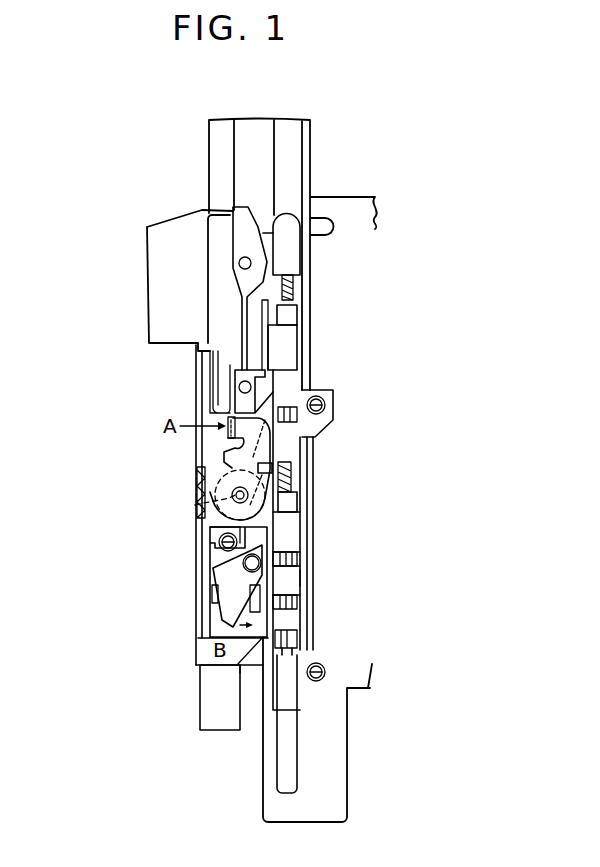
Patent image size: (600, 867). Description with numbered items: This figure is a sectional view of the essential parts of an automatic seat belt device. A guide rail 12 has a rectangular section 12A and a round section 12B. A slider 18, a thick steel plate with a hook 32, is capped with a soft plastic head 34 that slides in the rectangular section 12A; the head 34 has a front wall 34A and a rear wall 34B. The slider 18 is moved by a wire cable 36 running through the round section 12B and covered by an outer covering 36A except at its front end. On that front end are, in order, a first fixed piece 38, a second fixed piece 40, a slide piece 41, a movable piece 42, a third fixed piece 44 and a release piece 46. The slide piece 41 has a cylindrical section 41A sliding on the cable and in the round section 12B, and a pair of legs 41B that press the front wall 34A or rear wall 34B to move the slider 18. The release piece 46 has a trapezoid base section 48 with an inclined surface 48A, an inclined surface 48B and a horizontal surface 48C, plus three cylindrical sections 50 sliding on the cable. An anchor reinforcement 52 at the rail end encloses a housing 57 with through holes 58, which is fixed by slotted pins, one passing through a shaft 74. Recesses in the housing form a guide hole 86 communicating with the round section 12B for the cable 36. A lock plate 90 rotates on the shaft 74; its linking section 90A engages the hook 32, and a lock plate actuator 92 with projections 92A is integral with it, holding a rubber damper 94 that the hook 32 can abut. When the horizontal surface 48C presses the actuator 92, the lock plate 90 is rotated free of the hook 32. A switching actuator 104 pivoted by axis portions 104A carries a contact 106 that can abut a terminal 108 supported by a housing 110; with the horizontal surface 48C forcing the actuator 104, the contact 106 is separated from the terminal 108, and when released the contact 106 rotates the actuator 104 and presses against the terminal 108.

The guide rail 12 is at (312, 128).
The rectangular section of guide rail 12A is at (247, 140).
The round section of guide rail 12B is at (287, 130).
The slider 18 is at (173, 214).
The head 34 is at (259, 212).
The front wall 34A is at (240, 305).
The rear wall 34B is at (263, 363).
The wire cable 36 is at (290, 288).
The outer covering 36A is at (297, 785).
The first fixed piece 38 is at (302, 255).
The second fixed piece 40 is at (292, 315).
The slide piece 41 is at (308, 352).
The cylindrical section 41A is at (283, 363).
The legs 41B is at (217, 365).
The movable piece 42 is at (290, 445).
The third fixed piece 44 is at (293, 530).
The release piece 46 is at (303, 590).
The base section 48 is at (290, 620).
The inclined surface 48A is at (235, 525).
The inclined surface 48B is at (240, 673).
The horizontal surface 48C is at (255, 648).
The cylindrical sections 50 is at (297, 540).
The anchor reinforcement 52 is at (348, 765).
The housing 57 is at (335, 413).
The through holes 58 is at (320, 405).
The shaft 74 is at (213, 497).
The guide hole 86 is at (290, 503).
The lock plate 90 is at (205, 490).
The linking section 90A is at (227, 437).
The lock plate actuator 92 is at (292, 485).
The projections 92A is at (292, 470).
The rubber damper 94 is at (195, 505).
The hook 32 is at (232, 452).
The switching actuator 104 is at (245, 560).
The axis portions 104A is at (301, 578).
The contact 106 is at (217, 590).
The terminal 108 is at (252, 597).
The housing 110 is at (215, 722).